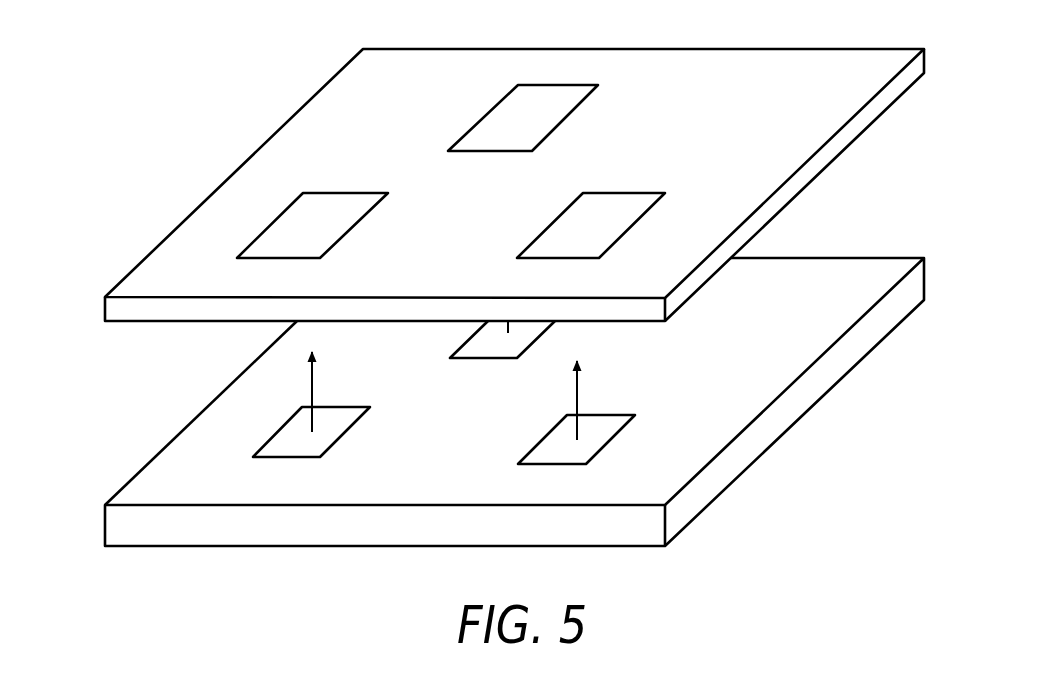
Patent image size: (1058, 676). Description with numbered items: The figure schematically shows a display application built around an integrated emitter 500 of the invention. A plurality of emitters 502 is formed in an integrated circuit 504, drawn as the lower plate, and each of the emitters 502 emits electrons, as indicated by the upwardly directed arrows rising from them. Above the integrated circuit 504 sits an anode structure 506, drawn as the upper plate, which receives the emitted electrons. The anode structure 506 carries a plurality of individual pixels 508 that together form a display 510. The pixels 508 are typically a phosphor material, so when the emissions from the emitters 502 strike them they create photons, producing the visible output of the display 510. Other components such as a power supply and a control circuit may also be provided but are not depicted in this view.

The integrated emitter 500 is at (148, 173).
The emitters 502 is at (480, 358).
The integrated circuit 504 is at (818, 402).
The anode structure 506 is at (386, 108).
The pixels 508 is at (587, 102).
The display 510 is at (905, 93).